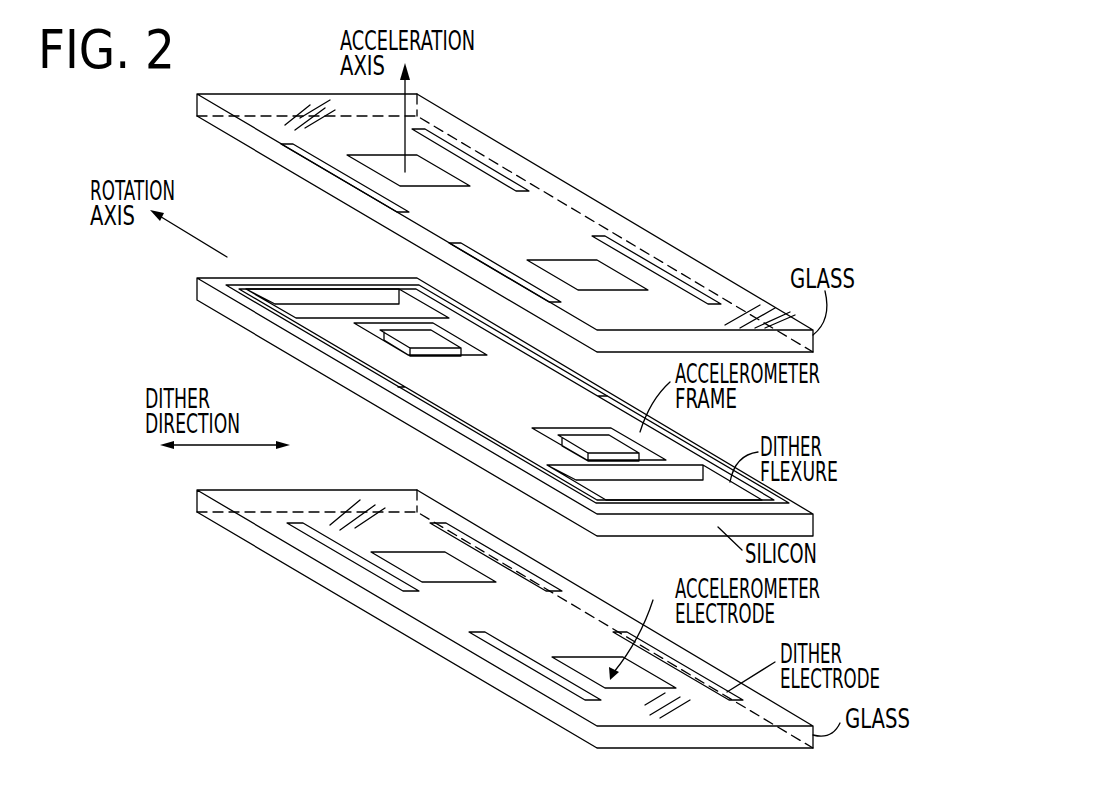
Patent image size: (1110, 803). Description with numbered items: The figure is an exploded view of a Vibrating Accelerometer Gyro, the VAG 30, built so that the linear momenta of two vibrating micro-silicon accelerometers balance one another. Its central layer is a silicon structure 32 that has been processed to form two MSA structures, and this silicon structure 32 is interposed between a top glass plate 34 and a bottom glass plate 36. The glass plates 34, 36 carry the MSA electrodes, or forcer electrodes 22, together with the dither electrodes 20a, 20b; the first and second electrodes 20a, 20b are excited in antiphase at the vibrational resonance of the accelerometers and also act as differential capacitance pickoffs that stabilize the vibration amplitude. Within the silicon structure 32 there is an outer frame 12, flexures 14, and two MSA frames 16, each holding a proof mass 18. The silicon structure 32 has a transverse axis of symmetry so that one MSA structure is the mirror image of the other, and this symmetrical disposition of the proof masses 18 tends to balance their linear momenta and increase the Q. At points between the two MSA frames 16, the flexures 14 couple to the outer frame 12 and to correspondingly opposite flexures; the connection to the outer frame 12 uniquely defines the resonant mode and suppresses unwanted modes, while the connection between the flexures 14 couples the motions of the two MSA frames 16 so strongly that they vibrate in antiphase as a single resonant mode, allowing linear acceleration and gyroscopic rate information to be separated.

The VAG 30 is at (677, 150).
The top glass plate 34 is at (197, 98).
The bottom glass plate 36 is at (197, 497).
The silicon structure 32 is at (182, 278).
The outer frame 12 is at (203, 305).
The flexures 14 is at (708, 478).
The MSA frame 16 is at (335, 334).
The proof mass 18 is at (610, 407).
The first electrode 20a is at (300, 152).
The second electrode 20b is at (458, 152).
The forcer electrodes 22 is at (440, 190).